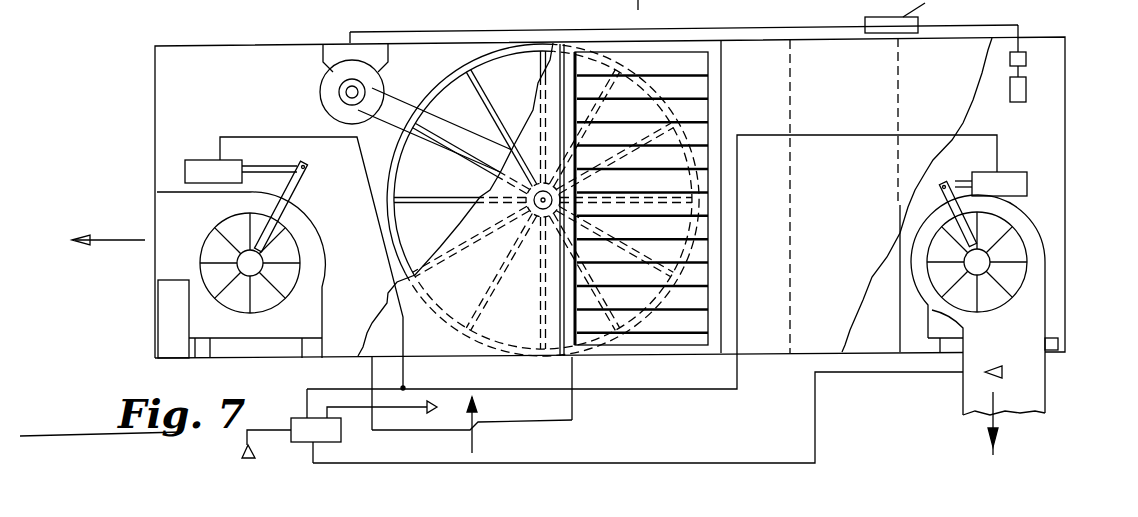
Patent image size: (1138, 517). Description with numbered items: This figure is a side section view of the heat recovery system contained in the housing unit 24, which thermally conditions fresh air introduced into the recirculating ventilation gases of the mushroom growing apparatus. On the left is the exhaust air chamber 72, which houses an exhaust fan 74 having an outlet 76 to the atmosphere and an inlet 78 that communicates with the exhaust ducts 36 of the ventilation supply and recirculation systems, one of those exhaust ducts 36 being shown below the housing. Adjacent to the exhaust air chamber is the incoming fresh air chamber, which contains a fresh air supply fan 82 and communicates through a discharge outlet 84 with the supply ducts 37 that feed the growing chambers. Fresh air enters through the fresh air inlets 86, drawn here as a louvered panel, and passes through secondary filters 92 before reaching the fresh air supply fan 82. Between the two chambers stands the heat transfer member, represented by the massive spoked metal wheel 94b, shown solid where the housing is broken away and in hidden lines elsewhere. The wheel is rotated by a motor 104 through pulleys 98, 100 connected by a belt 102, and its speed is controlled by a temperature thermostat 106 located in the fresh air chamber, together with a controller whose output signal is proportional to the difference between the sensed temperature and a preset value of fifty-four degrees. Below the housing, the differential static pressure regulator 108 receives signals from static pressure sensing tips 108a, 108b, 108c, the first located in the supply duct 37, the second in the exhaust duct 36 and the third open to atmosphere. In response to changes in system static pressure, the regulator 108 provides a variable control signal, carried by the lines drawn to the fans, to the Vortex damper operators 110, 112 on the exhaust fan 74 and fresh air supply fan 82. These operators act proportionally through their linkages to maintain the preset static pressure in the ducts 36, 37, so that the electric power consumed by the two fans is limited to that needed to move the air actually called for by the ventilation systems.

The exhaust air chamber 72 is at (170, 112).
The outlet 76 is at (170, 250).
The exhaust fan 74 is at (268, 295).
The Vortex damper operator 110 is at (190, 165).
The inlet 78 is at (363, 363).
The pulley 100 is at (332, 92).
The motor 104 is at (355, 72).
The belt 102 is at (400, 97).
The metal wheel 94b is at (517, 53).
The pulley 98 is at (543, 200).
The fresh air inlet 86 is at (693, 50).
The secondary filter 92 is at (888, 115).
The temperature thermostat 106 is at (1027, 88).
The Vortex damper operator 112 is at (1027, 183).
The fresh air supply fan 82 is at (1012, 277).
The discharge outlet 84 is at (1053, 333).
The housing unit 24 is at (870, 312).
The static pressure sensing tip 108a is at (1002, 372).
The duct 37 is at (1035, 405).
The exhaust duct 36 is at (562, 400).
The differential static pressure regulator 108 is at (297, 422).
The static pressure sensing tip 108b is at (427, 408).
The static pressure sensing tip 108c is at (240, 450).